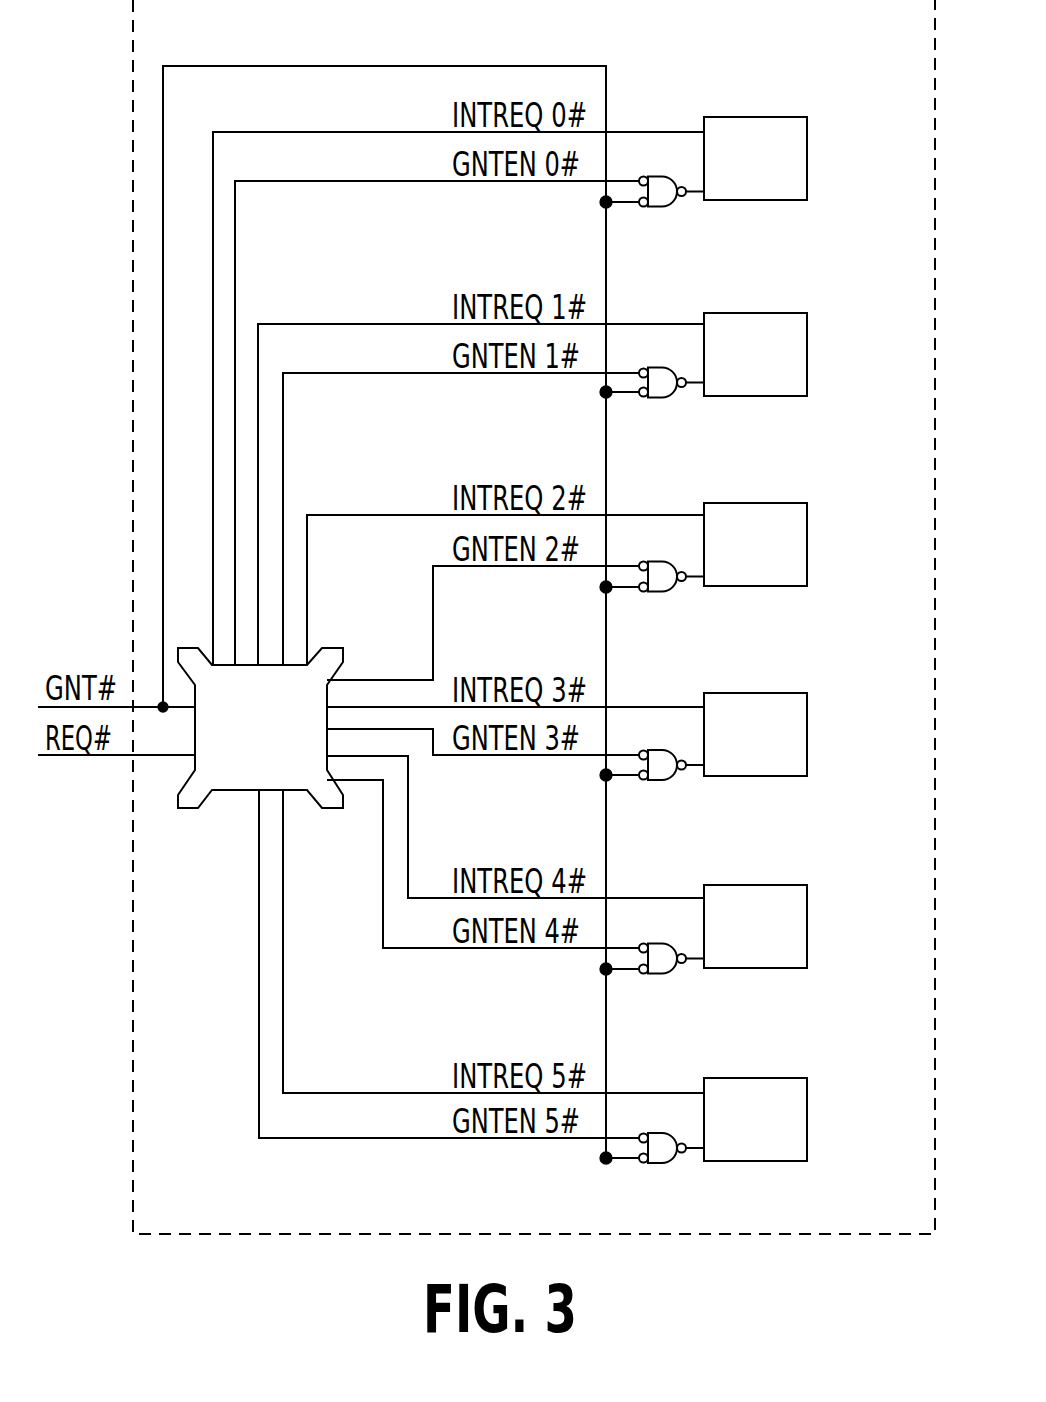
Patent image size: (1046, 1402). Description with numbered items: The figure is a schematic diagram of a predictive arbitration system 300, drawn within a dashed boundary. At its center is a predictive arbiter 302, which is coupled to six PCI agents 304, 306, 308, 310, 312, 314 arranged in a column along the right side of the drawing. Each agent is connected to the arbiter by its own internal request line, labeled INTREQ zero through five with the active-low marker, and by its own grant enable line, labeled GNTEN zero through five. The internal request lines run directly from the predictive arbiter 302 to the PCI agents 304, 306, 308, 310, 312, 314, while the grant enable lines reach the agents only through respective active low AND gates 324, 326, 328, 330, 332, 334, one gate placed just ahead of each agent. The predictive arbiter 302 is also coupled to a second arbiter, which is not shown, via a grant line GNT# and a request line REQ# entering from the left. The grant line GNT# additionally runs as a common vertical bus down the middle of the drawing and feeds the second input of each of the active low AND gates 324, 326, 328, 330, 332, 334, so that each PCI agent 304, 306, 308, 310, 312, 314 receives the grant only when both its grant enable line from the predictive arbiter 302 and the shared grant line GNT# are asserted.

The predictive arbitration system 300 is at (212, 52).
The predictive arbiter 302 is at (283, 702).
The PCI agent 304 is at (812, 157).
The PCI agent 306 is at (812, 353).
The PCI agent 308 is at (812, 543).
The PCI agent 310 is at (812, 733).
The PCI agent 312 is at (812, 925).
The PCI agent 314 is at (812, 1118).
The active low AND gate 324 is at (657, 212).
The active low AND gate 326 is at (657, 402).
The active low AND gate 328 is at (657, 597).
The active low AND gate 330 is at (657, 785).
The active low AND gate 332 is at (657, 979).
The active low AND gate 334 is at (657, 1168).